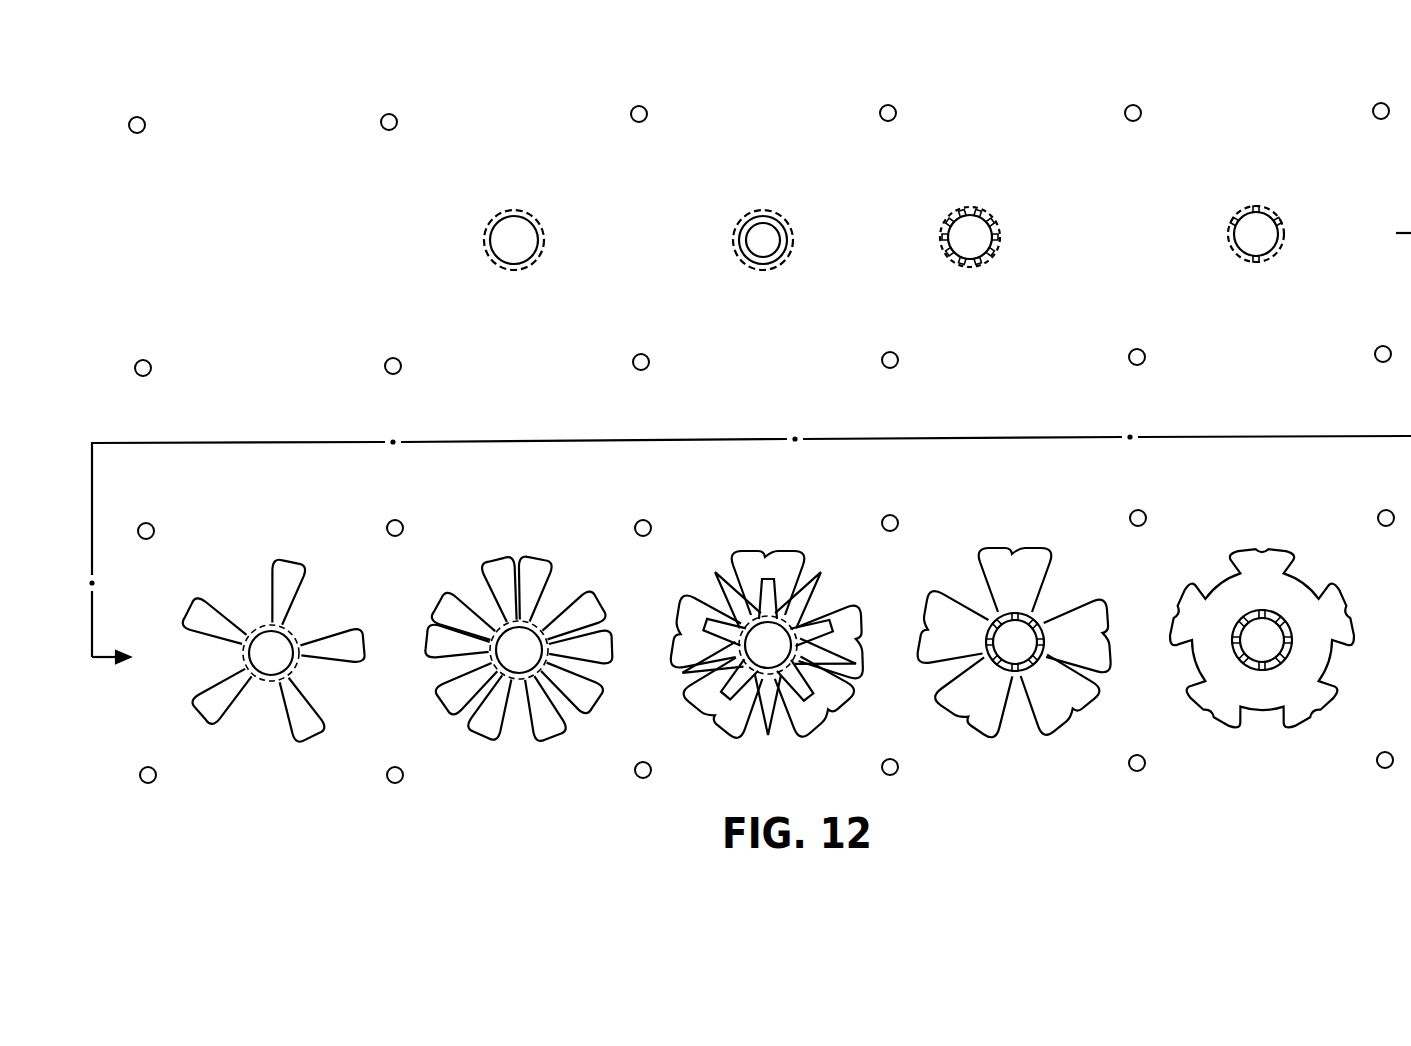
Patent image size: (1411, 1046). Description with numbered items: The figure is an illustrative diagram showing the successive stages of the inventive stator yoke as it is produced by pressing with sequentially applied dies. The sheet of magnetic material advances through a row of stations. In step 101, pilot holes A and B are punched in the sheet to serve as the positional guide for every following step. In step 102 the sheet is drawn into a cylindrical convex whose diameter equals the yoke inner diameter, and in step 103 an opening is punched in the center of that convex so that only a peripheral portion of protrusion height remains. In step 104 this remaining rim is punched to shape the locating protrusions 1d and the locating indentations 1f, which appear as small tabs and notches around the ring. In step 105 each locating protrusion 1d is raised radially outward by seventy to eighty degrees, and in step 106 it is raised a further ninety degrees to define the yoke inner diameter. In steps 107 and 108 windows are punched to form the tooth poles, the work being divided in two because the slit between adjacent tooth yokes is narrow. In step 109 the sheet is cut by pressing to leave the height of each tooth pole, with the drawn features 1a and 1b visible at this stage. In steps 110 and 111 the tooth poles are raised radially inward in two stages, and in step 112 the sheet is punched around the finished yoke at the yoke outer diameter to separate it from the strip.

The pointed spike portion of blank 1a is at (767, 652).
The rectangular tab portion of blank 1b is at (818, 574).
The locating protrusions 1d is at (970, 235).
The locating indentations 1f is at (953, 210).
The pilot hole A is at (143, 131).
The pilot hole B is at (150, 362).
The step 101 is at (250, 118).
The step 102 is at (514, 186).
The step 103 is at (763, 184).
The step 104 is at (970, 208).
The step 105 is at (1263, 180).
The step 106 is at (1263, 180).
The step 107 is at (273, 624).
The step 108 is at (519, 624).
The step 109 is at (767, 634).
The step 110 is at (1013, 622).
The step 111 is at (1013, 622).
The step 112 is at (1262, 616).